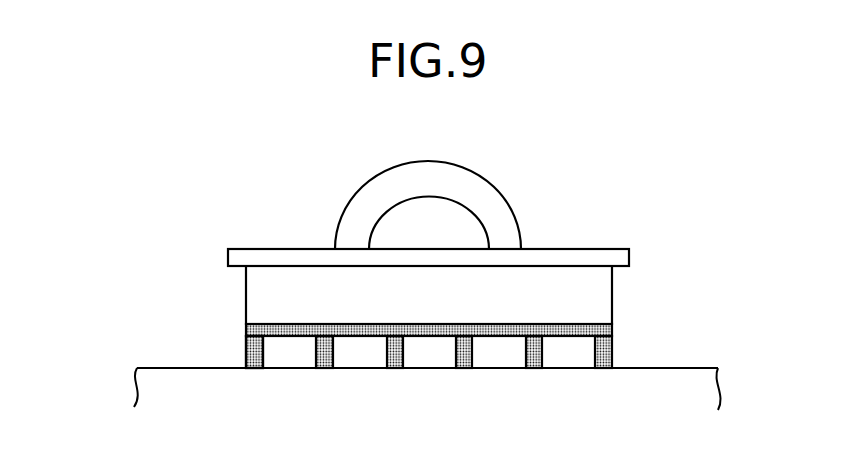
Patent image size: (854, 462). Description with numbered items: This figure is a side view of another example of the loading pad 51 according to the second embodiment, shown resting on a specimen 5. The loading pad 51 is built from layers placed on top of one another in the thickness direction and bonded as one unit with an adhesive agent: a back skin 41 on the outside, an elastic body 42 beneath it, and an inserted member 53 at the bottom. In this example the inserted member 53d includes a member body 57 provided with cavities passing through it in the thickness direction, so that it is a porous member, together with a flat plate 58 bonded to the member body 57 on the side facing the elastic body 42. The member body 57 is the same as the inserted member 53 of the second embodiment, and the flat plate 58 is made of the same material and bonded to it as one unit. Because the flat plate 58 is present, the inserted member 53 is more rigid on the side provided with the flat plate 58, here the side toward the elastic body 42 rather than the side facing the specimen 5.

The specimen 5 is at (690, 368).
The back skin 41 is at (263, 248).
The elastic body 42 is at (246, 303).
The loading pad 51 is at (598, 211).
The inserted member 53 is at (159, 341).
The inserted member 53d is at (245, 349).
The member body 57 is at (614, 346).
The flat plate 58 is at (614, 324).